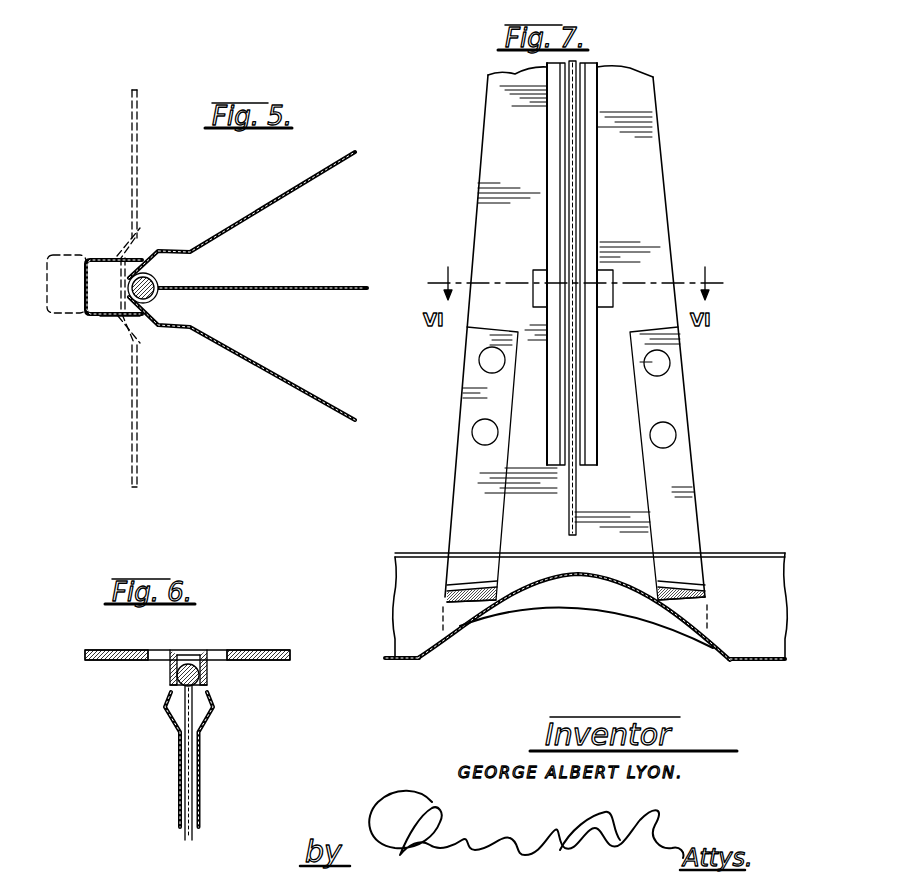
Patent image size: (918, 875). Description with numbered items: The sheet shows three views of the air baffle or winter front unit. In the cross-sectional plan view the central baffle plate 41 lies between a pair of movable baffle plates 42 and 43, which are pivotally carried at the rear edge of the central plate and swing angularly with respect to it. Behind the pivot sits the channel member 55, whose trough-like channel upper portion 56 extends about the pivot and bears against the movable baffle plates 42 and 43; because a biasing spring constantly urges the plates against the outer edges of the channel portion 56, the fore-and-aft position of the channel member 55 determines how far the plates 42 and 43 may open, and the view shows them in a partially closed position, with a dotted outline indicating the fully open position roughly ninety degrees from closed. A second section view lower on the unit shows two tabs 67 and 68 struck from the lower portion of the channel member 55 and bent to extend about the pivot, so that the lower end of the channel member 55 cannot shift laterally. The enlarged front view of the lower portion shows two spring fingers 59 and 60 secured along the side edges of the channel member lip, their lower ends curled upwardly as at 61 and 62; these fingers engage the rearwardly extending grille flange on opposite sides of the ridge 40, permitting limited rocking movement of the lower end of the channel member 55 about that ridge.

In FIG. 7, the ridge 40 is at (590, 564).
In FIG. 5, the central baffle plate 41 is at (278, 262).
In FIG. 6, the central baffle plate 41 is at (186, 830).
In FIG. 7, the central baffle plate 41 is at (571, 493).
In FIG. 5, the movable baffle plate 42 is at (240, 350).
In FIG. 6, the movable baffle plate 42 is at (178, 768).
In FIG. 7, the movable baffle plate 42 is at (562, 447).
In FIG. 5, the movable baffle plate 43 is at (138, 185).
In FIG. 6, the movable baffle plate 43 is at (200, 768).
In FIG. 7, the movable baffle plate 43 is at (585, 433).
In FIG. 5, the channel member 55 is at (82, 294).
In FIG. 5, the channel upper portion 56 is at (99, 318).
In FIG. 7, the spring finger 59 is at (462, 505).
In FIG. 7, the spring finger 60 is at (687, 517).
In FIG. 7, the curled lower end 61 is at (473, 603).
In FIG. 7, the curled lower end 62 is at (673, 603).
In FIG. 6, the tab 67 is at (172, 672).
In FIG. 6, the tab 68 is at (207, 672).